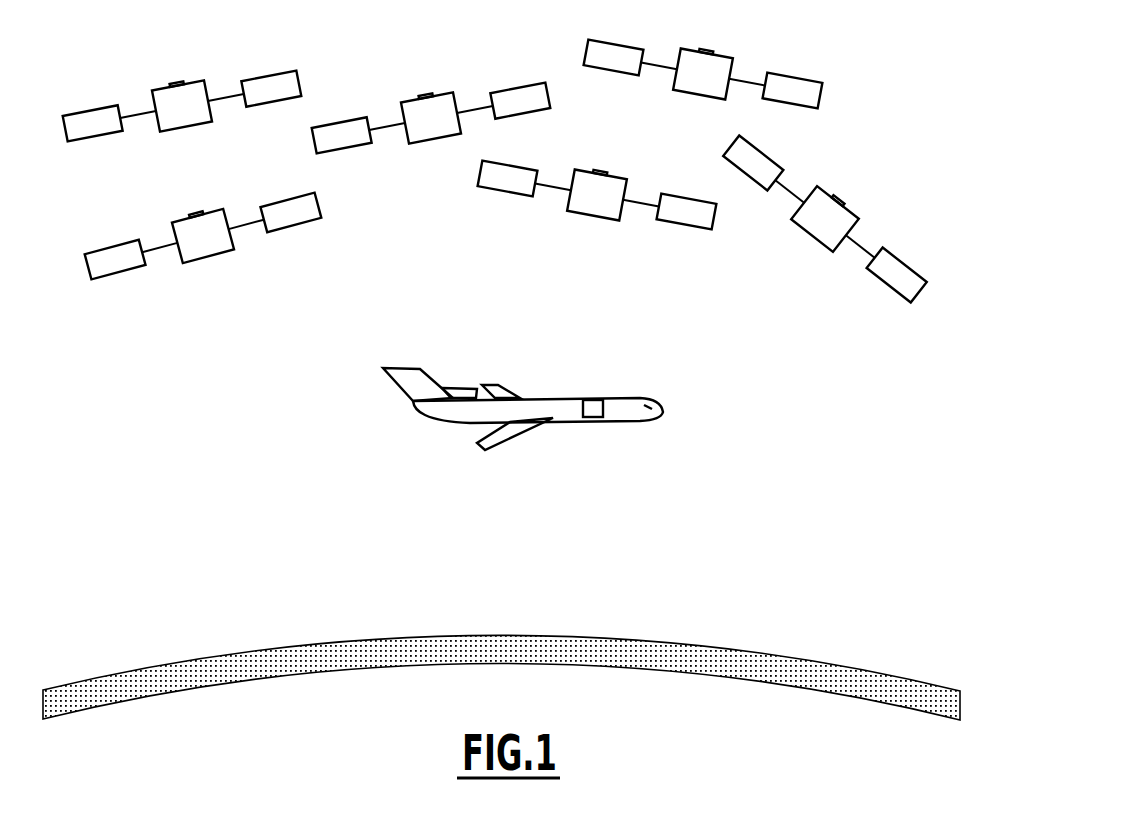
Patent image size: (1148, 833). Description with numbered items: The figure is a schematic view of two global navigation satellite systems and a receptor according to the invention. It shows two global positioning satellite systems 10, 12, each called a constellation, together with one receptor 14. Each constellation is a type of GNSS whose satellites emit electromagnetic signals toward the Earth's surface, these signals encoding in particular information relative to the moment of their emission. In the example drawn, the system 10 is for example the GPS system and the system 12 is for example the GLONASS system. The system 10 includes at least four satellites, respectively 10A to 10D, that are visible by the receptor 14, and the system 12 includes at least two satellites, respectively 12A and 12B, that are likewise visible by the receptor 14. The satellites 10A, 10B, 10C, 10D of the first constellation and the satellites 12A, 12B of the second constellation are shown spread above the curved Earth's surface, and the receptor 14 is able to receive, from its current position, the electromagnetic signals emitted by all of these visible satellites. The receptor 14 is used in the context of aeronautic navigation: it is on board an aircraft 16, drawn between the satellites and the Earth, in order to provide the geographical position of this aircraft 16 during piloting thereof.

The global positioning satellite system 10 is at (372, 210).
The satellite 10A is at (170, 100).
The satellite 10B is at (693, 65).
The satellite 10C is at (413, 112).
The satellite 10D is at (595, 195).
The global positioning satellite system 12 is at (780, 270).
The satellite 12A is at (837, 220).
The satellite 12B is at (188, 235).
The receptor 14 is at (593, 408).
The aircraft 16 is at (512, 361).